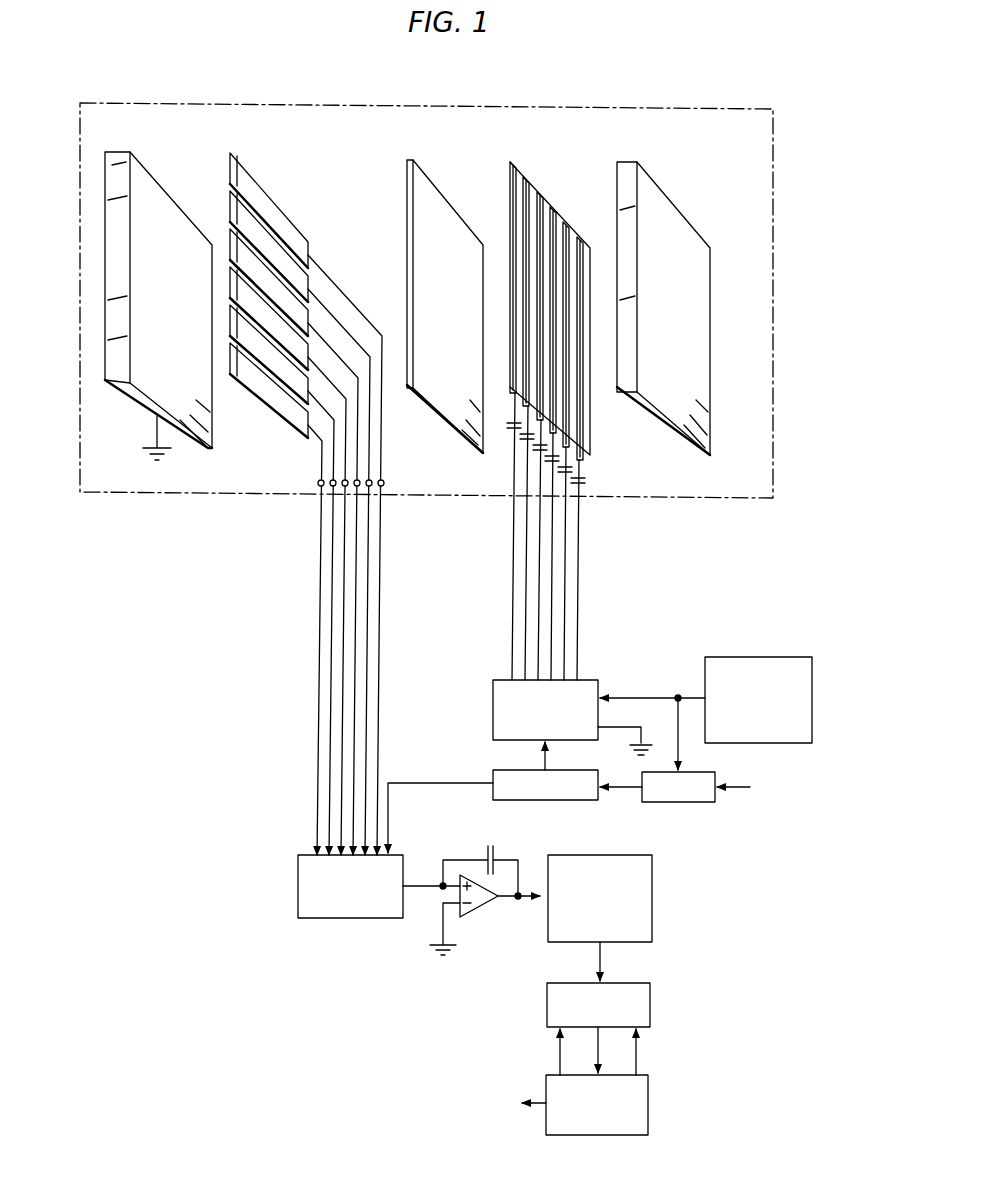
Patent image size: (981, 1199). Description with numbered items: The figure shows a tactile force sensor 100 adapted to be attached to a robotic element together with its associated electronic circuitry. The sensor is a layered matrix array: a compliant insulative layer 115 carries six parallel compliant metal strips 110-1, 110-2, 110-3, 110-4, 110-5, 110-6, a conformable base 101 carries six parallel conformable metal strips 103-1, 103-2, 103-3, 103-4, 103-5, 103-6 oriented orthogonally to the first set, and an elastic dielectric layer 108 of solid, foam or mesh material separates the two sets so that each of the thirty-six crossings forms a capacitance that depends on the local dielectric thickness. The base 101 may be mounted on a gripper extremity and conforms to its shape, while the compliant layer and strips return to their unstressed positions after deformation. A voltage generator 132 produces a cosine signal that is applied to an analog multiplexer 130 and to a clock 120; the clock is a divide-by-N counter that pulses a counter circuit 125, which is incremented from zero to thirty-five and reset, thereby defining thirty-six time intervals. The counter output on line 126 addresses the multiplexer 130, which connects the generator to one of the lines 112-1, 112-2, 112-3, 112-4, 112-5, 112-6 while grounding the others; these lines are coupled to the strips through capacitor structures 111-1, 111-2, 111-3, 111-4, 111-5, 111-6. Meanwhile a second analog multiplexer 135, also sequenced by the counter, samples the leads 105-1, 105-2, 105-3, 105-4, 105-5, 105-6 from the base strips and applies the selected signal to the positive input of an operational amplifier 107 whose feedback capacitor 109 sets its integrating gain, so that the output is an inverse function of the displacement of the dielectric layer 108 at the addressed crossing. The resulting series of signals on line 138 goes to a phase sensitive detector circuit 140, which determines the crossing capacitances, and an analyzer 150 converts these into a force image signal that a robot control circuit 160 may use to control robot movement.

The sensor 100 is at (775, 184).
The conformable base 101 is at (140, 172).
The conformable metal strip 103-1 is at (275, 218).
The conformable metal strip 103-2 is at (238, 200).
The conformable metal strip 103-3 is at (238, 236).
The conformable metal strip 103-4 is at (233, 293).
The conformable metal strip 103-5 is at (272, 345).
The conformable metal strip 103-6 is at (293, 430).
The lead 105-1 is at (380, 517).
The lead 105-2 is at (368, 542).
The lead 105-3 is at (356, 566).
The lead 105-4 is at (344, 516).
The lead 105-5 is at (332, 541).
The lead 105-6 is at (320, 566).
The operational amplifier 107 is at (451, 915).
The elastic dielectric layer 108 is at (410, 178).
The amplifier feedback capacitor 109 is at (486, 866).
The compliant metal strip 110-1 is at (512, 166).
The compliant metal strip 110-2 is at (526, 177).
The compliant metal strip 110-3 is at (540, 192).
The compliant metal strip 110-4 is at (553, 207).
The compliant metal strip 110-5 is at (566, 222).
The compliant metal strip 110-6 is at (580, 238).
The capacitor structure 111-1 is at (510, 430).
The capacitor structure 111-2 is at (527, 436).
The capacitor structure 111-3 is at (540, 447).
The capacitor structure 111-4 is at (552, 458).
The capacitor structure 111-5 is at (565, 469).
The capacitor structure 111-6 is at (585, 479).
The line 112-1 is at (514, 517).
The line 112-2 is at (527, 541).
The line 112-3 is at (540, 563).
The line 112-4 is at (554, 522).
The line 112-5 is at (567, 545).
The line 112-6 is at (580, 567).
The compliant insulative layer 115 is at (678, 217).
The clock 120 is at (698, 803).
The counter circuit 125 is at (540, 801).
The line 126 is at (545, 756).
The analog multiplexer 130 is at (492, 688).
The voltage generator 132 is at (788, 657).
The analog multiplexer 135 is at (298, 858).
The line 138 is at (526, 900).
The detector circuit 140 is at (652, 876).
The analyzer 150 is at (652, 986).
The robot control circuit 160 is at (650, 1094).